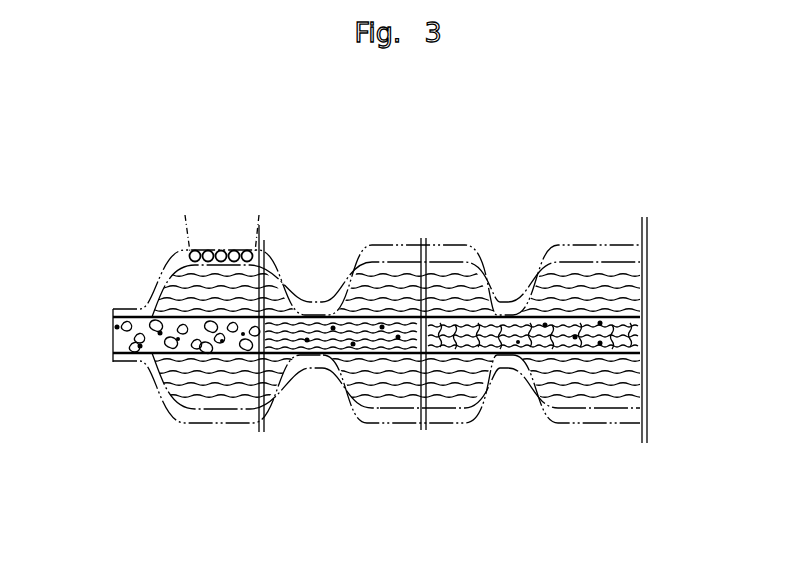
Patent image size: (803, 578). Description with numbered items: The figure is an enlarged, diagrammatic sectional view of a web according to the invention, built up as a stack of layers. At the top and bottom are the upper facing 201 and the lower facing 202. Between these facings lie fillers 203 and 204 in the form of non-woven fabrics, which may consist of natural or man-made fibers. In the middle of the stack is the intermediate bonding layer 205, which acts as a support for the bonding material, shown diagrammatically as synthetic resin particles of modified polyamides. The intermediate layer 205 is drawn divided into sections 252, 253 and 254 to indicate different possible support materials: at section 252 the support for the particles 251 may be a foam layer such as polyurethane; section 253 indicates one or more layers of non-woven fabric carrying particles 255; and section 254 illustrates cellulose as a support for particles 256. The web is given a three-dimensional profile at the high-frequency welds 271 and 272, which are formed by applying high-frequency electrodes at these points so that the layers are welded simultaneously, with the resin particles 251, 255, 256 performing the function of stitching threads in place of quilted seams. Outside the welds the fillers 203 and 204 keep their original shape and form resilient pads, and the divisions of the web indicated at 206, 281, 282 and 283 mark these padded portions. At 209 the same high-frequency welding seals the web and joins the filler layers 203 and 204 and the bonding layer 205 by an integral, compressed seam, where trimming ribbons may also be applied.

The upper facing 201 is at (593, 250).
The lower facing 202 is at (622, 415).
The filler 203 is at (620, 292).
The filler 204 is at (617, 380).
The support for the bonding material 205 is at (625, 335).
The section boundaries 206 is at (446, 247).
The seal 209 is at (113, 342).
The synthetic resin particles 251 is at (160, 333).
The section 252 is at (207, 347).
The section 253 is at (344, 325).
The section 254 is at (485, 325).
The synthetic resin particles 255 is at (398, 337).
The synthetic resin particles 256 is at (600, 343).
The high-frequency weld 271 is at (317, 382).
The high-frequency weld 272 is at (510, 380).
The first bulge 281 is at (227, 427).
The second bulge 282 is at (407, 427).
The third bulge 283 is at (590, 427).